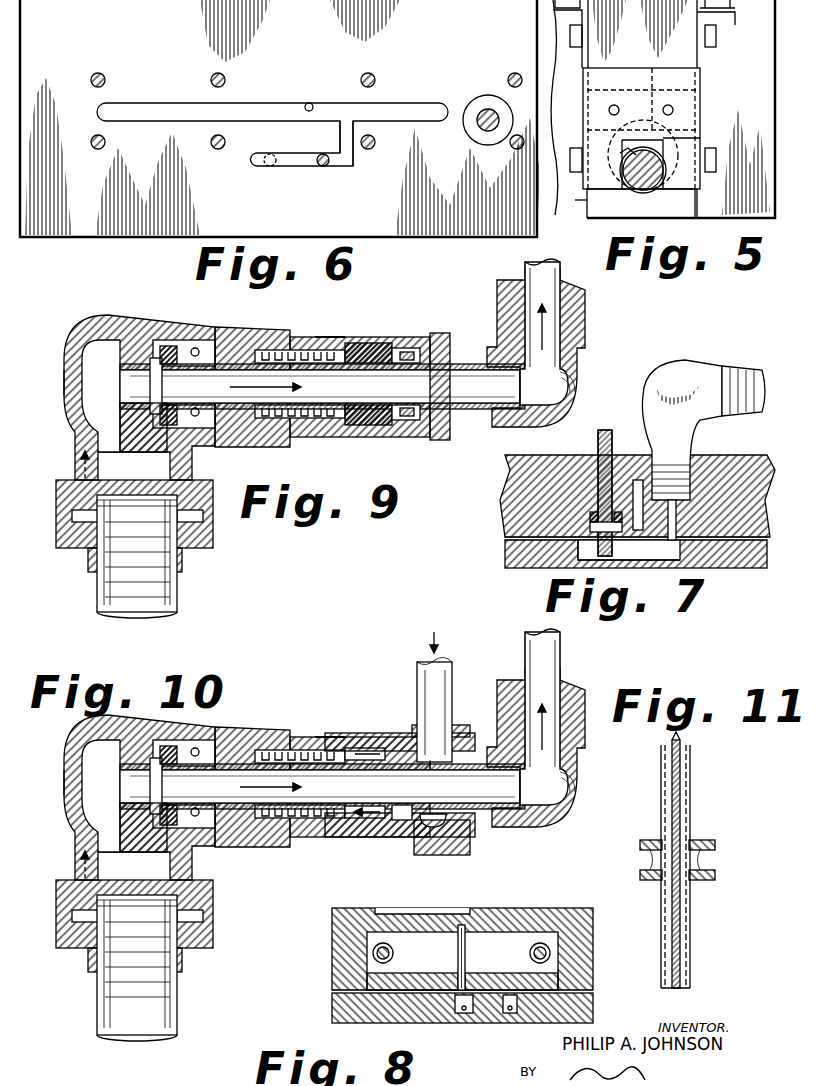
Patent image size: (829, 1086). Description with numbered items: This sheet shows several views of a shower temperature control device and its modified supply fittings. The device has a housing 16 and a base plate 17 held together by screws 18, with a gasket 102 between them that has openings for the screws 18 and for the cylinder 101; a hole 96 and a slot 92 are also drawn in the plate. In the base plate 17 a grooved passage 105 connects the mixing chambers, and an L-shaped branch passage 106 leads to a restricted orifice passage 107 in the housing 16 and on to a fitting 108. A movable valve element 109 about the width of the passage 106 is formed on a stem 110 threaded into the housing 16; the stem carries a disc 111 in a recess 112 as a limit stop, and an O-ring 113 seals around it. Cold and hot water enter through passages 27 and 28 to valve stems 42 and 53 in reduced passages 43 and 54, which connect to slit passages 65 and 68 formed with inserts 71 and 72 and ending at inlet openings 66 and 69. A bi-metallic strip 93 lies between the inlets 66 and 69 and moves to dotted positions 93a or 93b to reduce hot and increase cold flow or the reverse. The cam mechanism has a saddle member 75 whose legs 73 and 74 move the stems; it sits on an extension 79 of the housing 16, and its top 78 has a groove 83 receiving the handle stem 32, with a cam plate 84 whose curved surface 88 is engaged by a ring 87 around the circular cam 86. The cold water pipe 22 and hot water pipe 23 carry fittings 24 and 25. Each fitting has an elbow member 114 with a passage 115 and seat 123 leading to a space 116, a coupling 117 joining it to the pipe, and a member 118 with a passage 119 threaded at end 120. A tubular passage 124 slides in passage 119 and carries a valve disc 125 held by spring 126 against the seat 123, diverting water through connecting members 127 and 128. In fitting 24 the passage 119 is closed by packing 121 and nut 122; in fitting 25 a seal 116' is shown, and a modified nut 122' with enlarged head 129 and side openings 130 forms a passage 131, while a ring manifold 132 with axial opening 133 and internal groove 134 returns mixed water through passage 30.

In FIG. 7, the housing 16 is at (518, 468).
In FIG. 8, the housing 16 is at (586, 912).
In FIG. 6, the base plate 17 is at (467, 230).
In FIG. 7, the base plate 17 is at (758, 568).
In FIG. 8, the base plate 17 is at (590, 1015).
In FIG. 6, the screws 18 is at (375, 80).
In FIG. 9, the cold water pipe 22 is at (178, 606).
In FIG. 10, the hot water pipe 23 is at (150, 968).
In FIG. 9, the cold water valve fitting 24 is at (134, 313).
In FIG. 10, the hot water valve fitting 25 is at (315, 707).
In FIG. 9, the passage 27 is at (554, 266).
In FIG. 10, the passage 28 is at (556, 698).
In FIG. 10, the passage 30 is at (449, 697).
In FIG. 5, the stem 32 is at (642, 202).
In FIG. 8, the valve stem 42 is at (375, 950).
In FIG. 8, the reduced circular passage 43 is at (378, 915).
In FIG. 8, the valve stem 53 is at (548, 953).
In FIG. 8, the circular passage 54 is at (548, 946).
In FIG. 8, the slit passage 65 is at (410, 935).
In FIG. 11, the opening 66 is at (661, 830).
In FIG. 7, the slit passage 68 is at (638, 480).
In FIG. 8, the slit passage 68 is at (500, 938).
In FIG. 11, the opening 69 is at (691, 830).
In FIG. 8, the insert 71 is at (420, 978).
In FIG. 7, the insert 72 is at (655, 490).
In FIG. 8, the insert 72 is at (505, 978).
In FIG. 5, the leg 73 is at (570, 80).
In FIG. 5, the leg 74 is at (717, 20).
In FIG. 5, the saddle member 75 is at (703, 72).
In FIG. 5, the top 78 is at (683, 80).
In FIG. 5, the extension 79 is at (587, 200).
In FIG. 5, the groove 83 is at (624, 160).
In FIG. 5, the cam plate 84 is at (690, 108).
In FIG. 5, the circular cam 86 is at (688, 140).
In FIG. 5, the ring 87 is at (660, 193).
In FIG. 5, the curved surface 88 is at (652, 92).
In FIG. 8, the vane slot 92 is at (459, 960).
In FIG. 11, the bi-metallic strip 93 is at (670, 742).
In FIG. 8, the bi-metallic strip 93 is at (463, 925).
In FIG. 11, the dotted line position 93a is at (690, 788).
In FIG. 11, the dotted line position 93b is at (658, 790).
In FIG. 6, the shaft hole 96 is at (488, 110).
In FIG. 6, the cylinder 101 is at (467, 108).
In FIG. 7, the gasket 102 is at (512, 522).
In FIG. 8, the gasket 102 is at (590, 990).
In FIG. 6, the grooved passage 105 is at (309, 103).
In FIG. 8, the grooved passage 105 is at (463, 1015).
In FIG. 6, the L-shaped branch passage 106 is at (344, 168).
In FIG. 7, the L-shaped branch passage 106 is at (700, 568).
In FIG. 8, the L-shaped branch passage 106 is at (509, 1015).
In FIG. 6, the restricted orifice passage 107 is at (269, 166).
In FIG. 7, the restricted orifice passage 107 is at (683, 522).
In FIG. 7, the fitting 108 is at (696, 365).
In FIG. 6, the movable valve element 109 is at (322, 167).
In FIG. 7, the movable valve element 109 is at (600, 548).
In FIG. 7, the stem 110 is at (597, 450).
In FIG. 7, the disc 111 is at (600, 530).
In FIG. 7, the recess 112 is at (629, 549).
In FIG. 7, the O-ring 113 is at (596, 500).
In FIG. 9, the elbow member 114 is at (68, 367).
In FIG. 10, the elbow member 114 is at (45, 774).
In FIG. 9, the passage 115 is at (123, 395).
In FIG. 10, the passage 115 is at (121, 786).
In FIG. 9, the space 116 is at (190, 358).
In FIG. 10, the seal 116' is at (203, 753).
In FIG. 9, the hex nut 117 is at (213, 515).
In FIG. 10, the hex nut 117 is at (156, 926).
In FIG. 9, the member 118 is at (338, 342).
In FIG. 10, the member 118 is at (370, 745).
In FIG. 9, the passage 119 is at (330, 340).
In FIG. 10, the passage 119 is at (337, 710).
In FIG. 9, the threaded end 120 is at (268, 321).
In FIG. 10, the threaded end 120 is at (322, 775).
In FIG. 9, the packing 121 is at (388, 345).
In FIG. 9, the nut 122 is at (456, 372).
In FIG. 10, the modified nut 122' is at (386, 722).
In FIG. 9, the seat 123 is at (135, 412).
In FIG. 10, the seat 123 is at (126, 840).
In FIG. 9, the tubular passage 124 is at (305, 422).
In FIG. 10, the tubular passage 124 is at (302, 843).
In FIG. 9, the valve disc 125 is at (166, 326).
In FIG. 10, the valve disc 125 is at (126, 797).
In FIG. 9, the spring 126 is at (232, 329).
In FIG. 10, the spring 126 is at (252, 775).
In FIG. 9, the connecting member 127 is at (580, 392).
In FIG. 7, the connecting member 127 is at (606, 375).
In FIG. 10, the connecting member 127 is at (559, 807).
In FIG. 9, the connecting member 128 is at (588, 340).
In FIG. 10, the connecting member 128 is at (548, 729).
In FIG. 10, the enlarged head 129 is at (495, 838).
In FIG. 10, the side openings 130 is at (454, 782).
In FIG. 10, the passage 131 is at (395, 833).
In FIG. 10, the ring manifold 132 is at (451, 779).
In FIG. 10, the axial opening 133 is at (400, 762).
In FIG. 10, the circular internal groove 134 is at (436, 772).